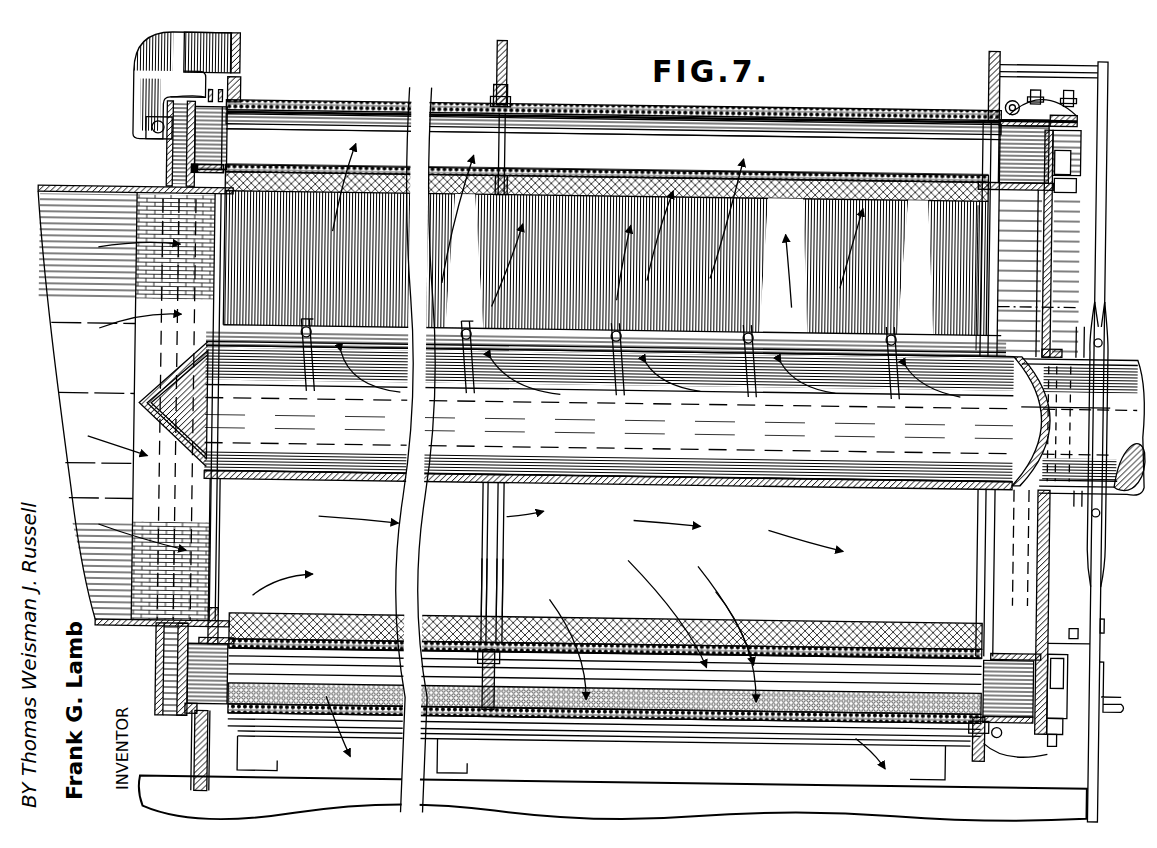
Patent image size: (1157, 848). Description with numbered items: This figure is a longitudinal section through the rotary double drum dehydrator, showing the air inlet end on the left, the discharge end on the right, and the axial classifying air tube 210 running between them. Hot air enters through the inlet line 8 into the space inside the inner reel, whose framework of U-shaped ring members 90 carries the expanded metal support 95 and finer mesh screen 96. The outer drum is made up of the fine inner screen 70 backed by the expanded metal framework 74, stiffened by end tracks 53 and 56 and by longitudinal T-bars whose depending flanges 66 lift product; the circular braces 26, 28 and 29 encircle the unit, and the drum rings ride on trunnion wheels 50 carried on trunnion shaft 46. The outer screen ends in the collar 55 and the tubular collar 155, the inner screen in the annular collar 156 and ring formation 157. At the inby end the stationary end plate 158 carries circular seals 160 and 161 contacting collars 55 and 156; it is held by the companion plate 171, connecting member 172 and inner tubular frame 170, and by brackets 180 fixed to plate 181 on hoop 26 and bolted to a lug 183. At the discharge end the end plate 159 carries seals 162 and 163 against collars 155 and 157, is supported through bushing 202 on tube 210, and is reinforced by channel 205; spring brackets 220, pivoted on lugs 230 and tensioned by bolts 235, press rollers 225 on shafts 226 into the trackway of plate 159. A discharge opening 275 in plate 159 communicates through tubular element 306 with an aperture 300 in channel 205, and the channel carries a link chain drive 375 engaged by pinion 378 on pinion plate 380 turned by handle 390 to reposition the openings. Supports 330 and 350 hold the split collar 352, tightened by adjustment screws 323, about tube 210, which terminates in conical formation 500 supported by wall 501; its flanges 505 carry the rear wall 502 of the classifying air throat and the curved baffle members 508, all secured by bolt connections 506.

The inlet line 8 is at (78, 188).
The circular brace 26 is at (240, 58).
The circular brace 28 is at (503, 65).
The circular brace 29 is at (984, 53).
The trunnion shaft 46 is at (315, 732).
The trunnion wheel 50 is at (482, 753).
The circular track 53 is at (241, 85).
The circular track collar 55 is at (211, 123).
The circular track 56 is at (984, 100).
The depending flange 66 is at (358, 130).
The inner screen 70 is at (565, 114).
The expanded metal framework 74 is at (313, 107).
The annular ring member 90 is at (990, 529).
The inner expanded metal support 95 is at (608, 179).
The finer mesh screen 96 is at (638, 176).
The tubular collar 155 is at (1010, 147).
The annular collar 156 is at (201, 175).
The ring formation 157 is at (985, 214).
The annular end plate 158 is at (186, 147).
The end plate 159 is at (1043, 190).
The circular seal 160 is at (168, 105).
The circular seal 161 is at (188, 177).
The seal 162 is at (920, 637).
The seal 163 is at (1042, 181).
The inner tubular frame 170 is at (136, 221).
The companion plate 171 is at (160, 656).
The connecting member 172 is at (200, 96).
The bracket 180 is at (160, 48).
The plate 181 is at (236, 45).
The lug 183 is at (150, 136).
The bushing 202 is at (1045, 350).
The channel 205 is at (1071, 698).
The classifying air supply tube 210 is at (645, 479).
The spring bracket 220 is at (1003, 745).
The roller 225 is at (1075, 116).
The shaft member 226 is at (1070, 96).
The lug 230 is at (1004, 96).
The bolt 235 is at (1032, 84).
The discharge opening 275 is at (1079, 144).
The aperture 300 is at (1069, 163).
The tubular element 306 is at (1075, 180).
The adjustment screw 323 is at (1103, 328).
The support 330 is at (1101, 244).
The support 350 is at (1115, 445).
The collar 352 is at (1100, 407).
The link chain drive 375 is at (198, 759).
The pinion 378 is at (1082, 626).
The pinion plate 380 is at (1108, 630).
The handle 390 is at (1120, 687).
The conical formation 500 is at (153, 400).
The wall 501 is at (218, 291).
The rear wall 502 is at (976, 277).
The flange formation 505 is at (538, 331).
The bolt connection 506 is at (468, 329).
The baffle member 508 is at (310, 388).